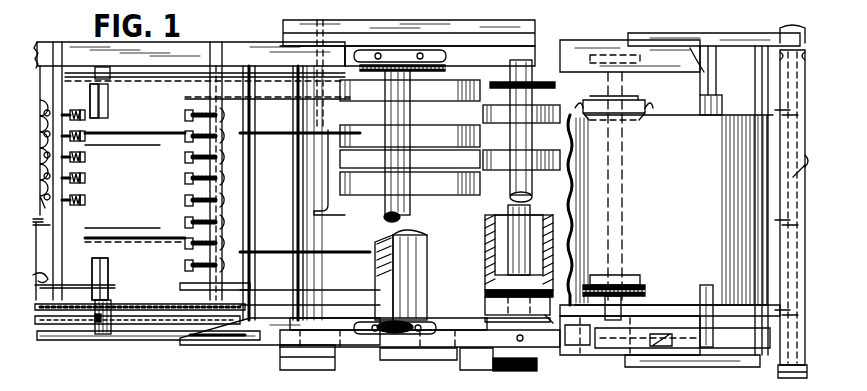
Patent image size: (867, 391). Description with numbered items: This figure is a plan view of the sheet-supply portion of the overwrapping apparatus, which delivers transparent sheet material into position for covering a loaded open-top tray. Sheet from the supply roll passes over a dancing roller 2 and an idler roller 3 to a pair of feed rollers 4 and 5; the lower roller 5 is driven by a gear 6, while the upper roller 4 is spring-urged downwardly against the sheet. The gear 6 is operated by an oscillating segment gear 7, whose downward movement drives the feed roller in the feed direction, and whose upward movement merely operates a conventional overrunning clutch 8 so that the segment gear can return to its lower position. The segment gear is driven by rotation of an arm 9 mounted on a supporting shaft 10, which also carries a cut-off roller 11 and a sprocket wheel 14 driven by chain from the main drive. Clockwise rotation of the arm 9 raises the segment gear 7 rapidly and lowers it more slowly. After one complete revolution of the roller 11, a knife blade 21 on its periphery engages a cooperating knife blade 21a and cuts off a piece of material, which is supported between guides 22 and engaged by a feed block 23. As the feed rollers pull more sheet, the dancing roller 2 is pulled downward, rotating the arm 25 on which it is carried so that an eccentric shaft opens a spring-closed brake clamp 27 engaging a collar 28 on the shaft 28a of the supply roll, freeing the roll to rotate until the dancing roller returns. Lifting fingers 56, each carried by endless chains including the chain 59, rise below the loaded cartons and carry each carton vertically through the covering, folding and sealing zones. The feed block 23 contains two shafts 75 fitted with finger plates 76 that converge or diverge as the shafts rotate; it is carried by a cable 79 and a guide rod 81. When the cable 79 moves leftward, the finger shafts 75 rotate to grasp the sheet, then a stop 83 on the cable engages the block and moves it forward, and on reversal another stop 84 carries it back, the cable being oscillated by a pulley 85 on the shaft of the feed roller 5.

The dancing roller 2 is at (770, 328).
The idler roller 3 is at (713, 297).
The upper feed roller 4 is at (548, 105).
The lower feed roller 5 is at (485, 260).
The gear 6 is at (530, 372).
The segment gear 7 is at (470, 372).
The overrunning clutch 8 is at (485, 308).
The arm 9 is at (418, 360).
The supporting shaft 10 is at (410, 208).
The cut-off roller 11 is at (372, 197).
The sprocket wheel 14 is at (445, 70).
The knife blade 21 is at (326, 228).
The cooperating knife blade 21a is at (436, 240).
The guides 22 is at (268, 100).
The feed block 23 is at (110, 78).
The arm 25 is at (742, 370).
The brake clamp 27 is at (632, 336).
The collar 28 is at (615, 355).
The shaft 28a is at (625, 300).
The lifting fingers 56 is at (118, 150).
The endless chain 59 is at (52, 259).
The shafts 75 is at (108, 100).
The finger plates 76 is at (100, 112).
The cable 79 is at (159, 313).
The guide rod 81 is at (195, 300).
The stop 83 is at (111, 310).
The stop 84 is at (95, 322).
The pulley 85 is at (548, 312).